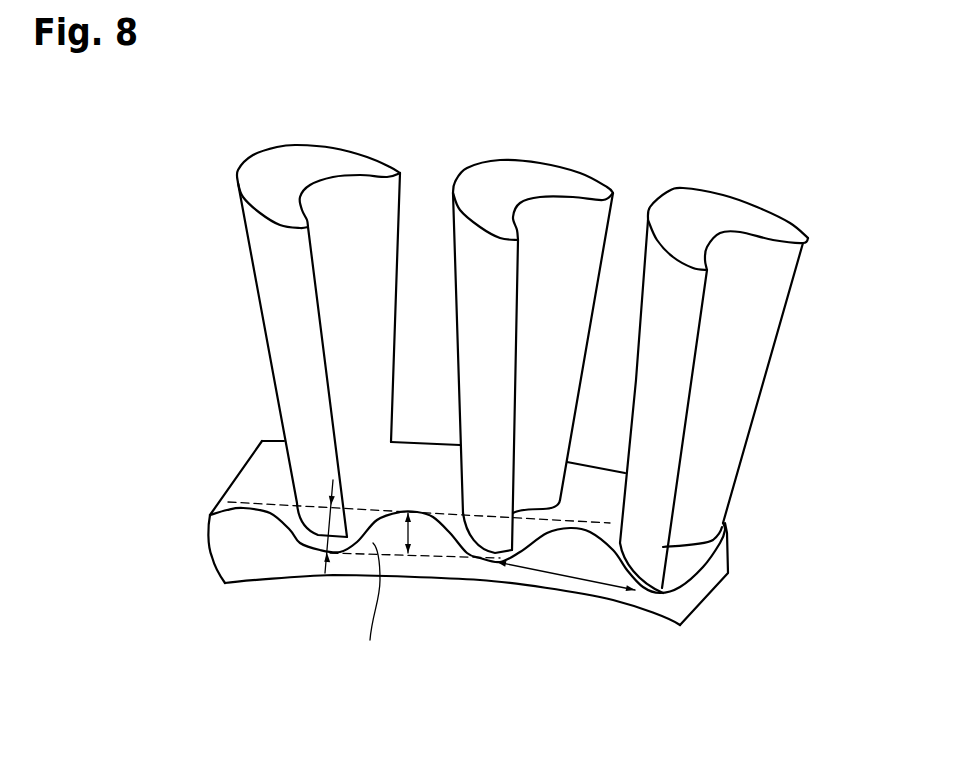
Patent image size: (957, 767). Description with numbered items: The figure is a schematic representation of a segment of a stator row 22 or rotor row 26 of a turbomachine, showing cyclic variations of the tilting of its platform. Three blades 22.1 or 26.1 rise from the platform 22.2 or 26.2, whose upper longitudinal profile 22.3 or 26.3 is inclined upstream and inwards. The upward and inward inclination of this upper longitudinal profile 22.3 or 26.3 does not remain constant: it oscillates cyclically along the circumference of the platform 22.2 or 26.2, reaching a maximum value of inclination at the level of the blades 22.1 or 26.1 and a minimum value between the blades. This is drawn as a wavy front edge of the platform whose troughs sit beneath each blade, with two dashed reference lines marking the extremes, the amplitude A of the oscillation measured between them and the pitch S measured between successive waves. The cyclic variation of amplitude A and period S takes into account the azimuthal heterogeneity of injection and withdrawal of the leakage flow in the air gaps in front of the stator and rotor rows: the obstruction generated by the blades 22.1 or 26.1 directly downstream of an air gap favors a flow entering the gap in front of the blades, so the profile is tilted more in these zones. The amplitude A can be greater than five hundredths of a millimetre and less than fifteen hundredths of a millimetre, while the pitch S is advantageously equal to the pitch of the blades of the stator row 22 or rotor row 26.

The stator row 22 is at (413, 412).
The rotor row 26 is at (180, 515).
The blades 22.1 is at (448, 369).
The blades 26.1 is at (667, 293).
The platform 22.2 is at (382, 566).
The platform 26.2 is at (232, 547).
The upper longitudinal profile 22.3 is at (378, 494).
The upper longitudinal profile 26.3 is at (250, 475).
The amplitude of oscillation A is at (417, 533).
The pitch of the oscillation S is at (567, 577).